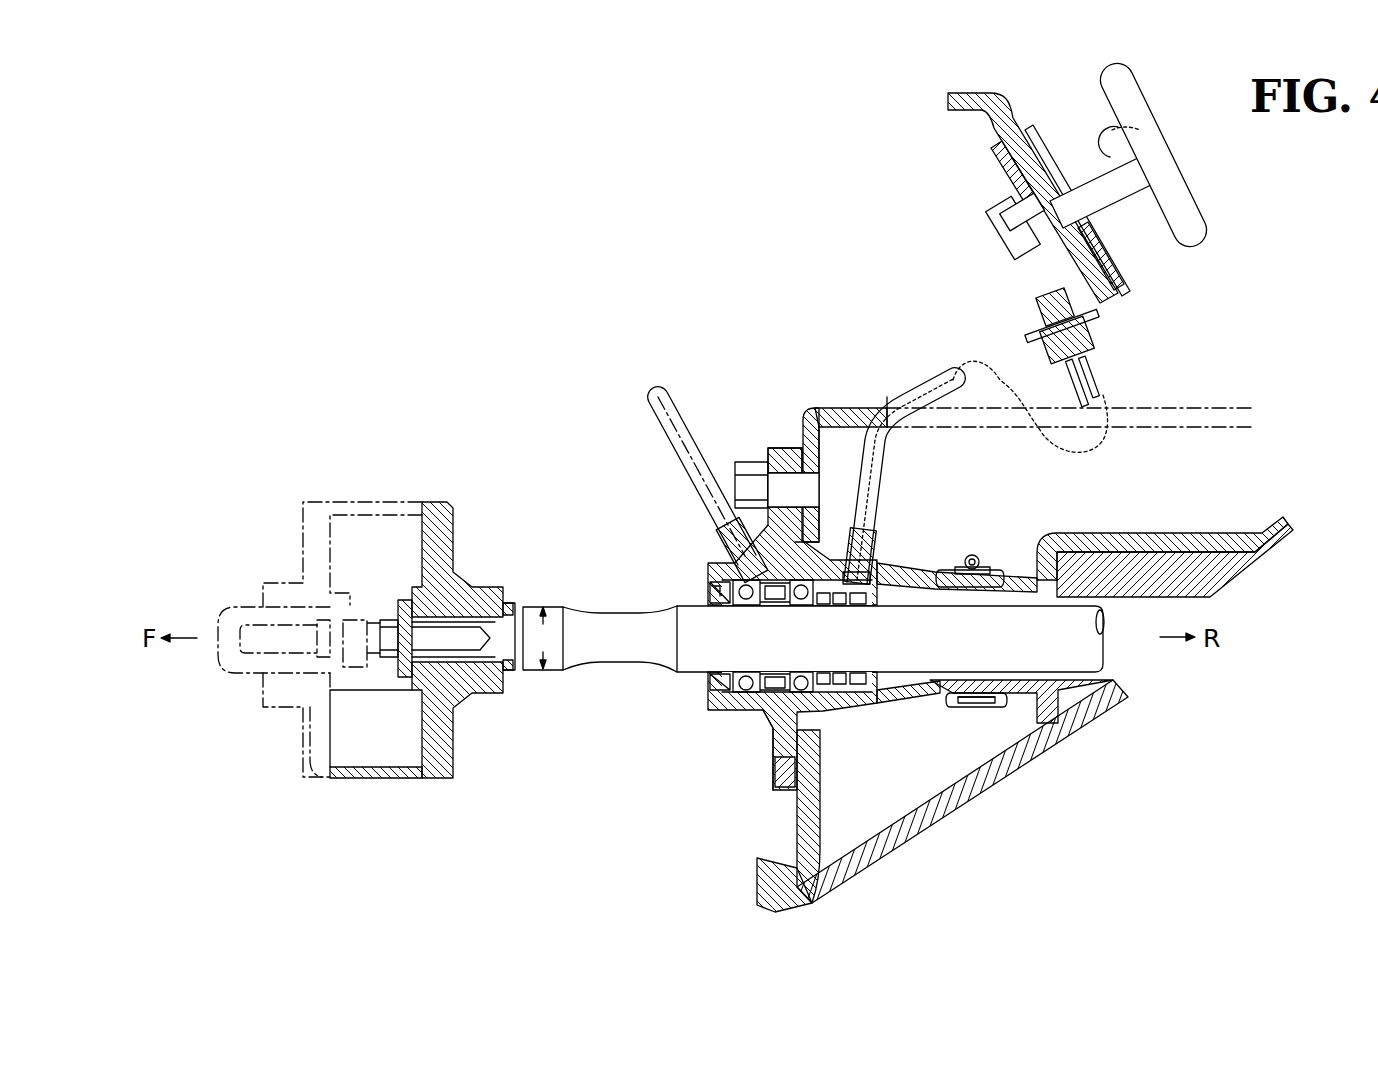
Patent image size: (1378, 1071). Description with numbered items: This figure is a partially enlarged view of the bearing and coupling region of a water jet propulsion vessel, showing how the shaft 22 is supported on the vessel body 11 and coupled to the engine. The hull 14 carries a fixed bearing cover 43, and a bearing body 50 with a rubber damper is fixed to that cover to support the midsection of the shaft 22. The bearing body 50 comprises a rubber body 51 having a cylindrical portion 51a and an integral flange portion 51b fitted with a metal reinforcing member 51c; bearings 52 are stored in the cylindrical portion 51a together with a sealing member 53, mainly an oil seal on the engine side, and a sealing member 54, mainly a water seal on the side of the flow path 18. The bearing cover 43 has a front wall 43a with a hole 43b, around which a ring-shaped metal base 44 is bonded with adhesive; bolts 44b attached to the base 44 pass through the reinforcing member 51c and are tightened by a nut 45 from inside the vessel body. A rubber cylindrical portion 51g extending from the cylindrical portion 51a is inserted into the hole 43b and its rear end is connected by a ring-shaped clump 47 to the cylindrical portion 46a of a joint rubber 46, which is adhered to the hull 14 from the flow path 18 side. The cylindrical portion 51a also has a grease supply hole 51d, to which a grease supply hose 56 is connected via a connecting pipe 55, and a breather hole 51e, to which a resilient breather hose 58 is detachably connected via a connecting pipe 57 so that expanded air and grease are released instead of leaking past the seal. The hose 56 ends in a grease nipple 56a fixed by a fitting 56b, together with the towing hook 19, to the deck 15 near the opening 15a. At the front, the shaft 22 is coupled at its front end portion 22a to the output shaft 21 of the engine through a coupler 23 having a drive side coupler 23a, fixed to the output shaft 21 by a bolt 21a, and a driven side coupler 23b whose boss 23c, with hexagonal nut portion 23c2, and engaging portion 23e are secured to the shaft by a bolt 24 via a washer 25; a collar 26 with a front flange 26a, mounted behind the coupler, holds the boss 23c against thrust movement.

The vessel body 11 is at (1135, 540).
The hull 14 is at (1045, 695).
The deck 15 is at (996, 183).
The opening 15a is at (937, 101).
The flow path 18 is at (1172, 828).
The towing hook 19 is at (1148, 143).
The output shaft 21 is at (292, 728).
The bolt 21a is at (347, 677).
The shaft 22 is at (1087, 652).
The front end portion 22a is at (472, 692).
The coupler 23 is at (417, 697).
The drive side coupler 23a is at (263, 707).
The driven side coupler 23b is at (380, 778).
The hexagonal nut portion 23c2 is at (502, 559).
The boss 23c is at (478, 582).
The engaging portion 23e is at (393, 747).
The bolt 24 is at (400, 603).
The washer 25 is at (410, 597).
The collar 26 is at (545, 636).
The flange 26a is at (512, 604).
The bearing cover 43 is at (872, 442).
The front wall 43a is at (835, 418).
The hole 43b is at (810, 547).
The base 44 is at (808, 616).
The bolt 44b is at (805, 492).
The nut 45 is at (752, 462).
The joint rubber 46 is at (1052, 729).
The cylindrical portion 46a is at (1036, 716).
The clump 47 is at (984, 705).
The bearing body 50 is at (835, 594).
The rubber body 51 is at (820, 594).
The cylindrical portion 51a is at (864, 528).
The flange portion 51b is at (772, 742).
The reinforcing member 51c is at (780, 447).
The grease supply hole 51d is at (848, 606).
The breather hole 51e is at (765, 605).
The rubber cylindrical portion 51g is at (940, 698).
The bearing 52 is at (735, 703).
The sealing member 53 is at (712, 690).
The sealing member 54 is at (863, 672).
The connecting pipe 55 is at (871, 570).
The grease supply hose 56 is at (1050, 354).
The grease nipple 56a is at (1037, 302).
The fitting 56b is at (1100, 322).
The connecting pipe 57 is at (738, 538).
The breather hose 58 is at (688, 430).